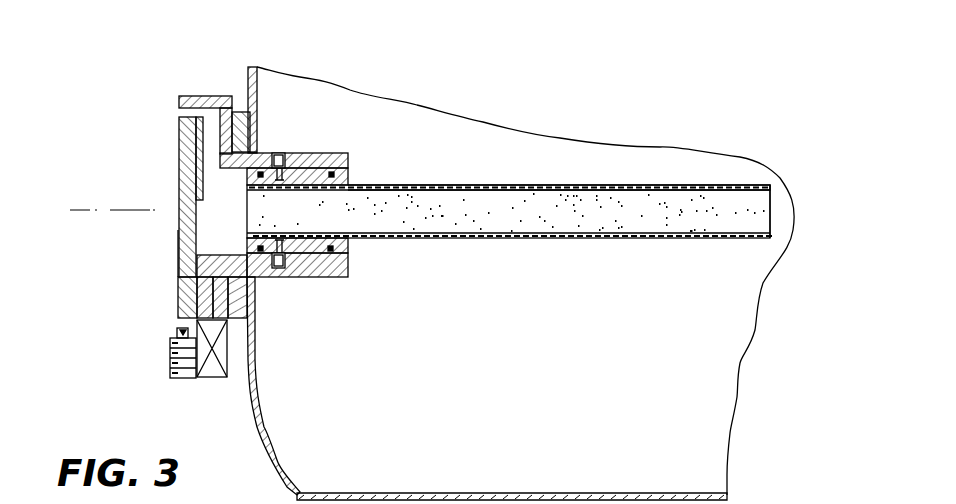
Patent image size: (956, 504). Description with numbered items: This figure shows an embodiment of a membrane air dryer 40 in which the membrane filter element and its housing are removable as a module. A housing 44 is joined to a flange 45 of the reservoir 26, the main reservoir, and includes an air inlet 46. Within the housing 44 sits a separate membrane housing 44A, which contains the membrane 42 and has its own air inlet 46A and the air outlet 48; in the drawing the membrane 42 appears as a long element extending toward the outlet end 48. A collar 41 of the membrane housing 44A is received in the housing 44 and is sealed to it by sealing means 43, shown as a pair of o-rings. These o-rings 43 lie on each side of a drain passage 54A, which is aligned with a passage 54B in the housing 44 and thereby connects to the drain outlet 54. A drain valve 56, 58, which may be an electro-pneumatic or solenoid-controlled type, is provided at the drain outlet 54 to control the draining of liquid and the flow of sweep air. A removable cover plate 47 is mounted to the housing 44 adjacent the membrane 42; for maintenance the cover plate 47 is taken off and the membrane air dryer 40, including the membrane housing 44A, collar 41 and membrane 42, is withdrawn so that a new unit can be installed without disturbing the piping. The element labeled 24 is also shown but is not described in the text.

The wall junction 24 is at (260, 152).
The reservoir 26 is at (287, 92).
The membrane air dryer 40 is at (595, 172).
The collar 41 is at (350, 177).
The membrane 42 is at (530, 200).
The sealing means 43 is at (355, 243).
The housing 44 is at (317, 157).
The membrane housing 44A is at (425, 183).
The flange 45 is at (248, 125).
The air inlet 46 is at (178, 112).
The air inlet 46A is at (223, 198).
The cover plate 47 is at (177, 247).
The air outlet 48 is at (770, 208).
The drain outlet 54 is at (177, 307).
The drain passage 54A is at (310, 260).
The passage 54B is at (177, 288).
The valve 56 is at (212, 372).
The valve 58 is at (168, 370).